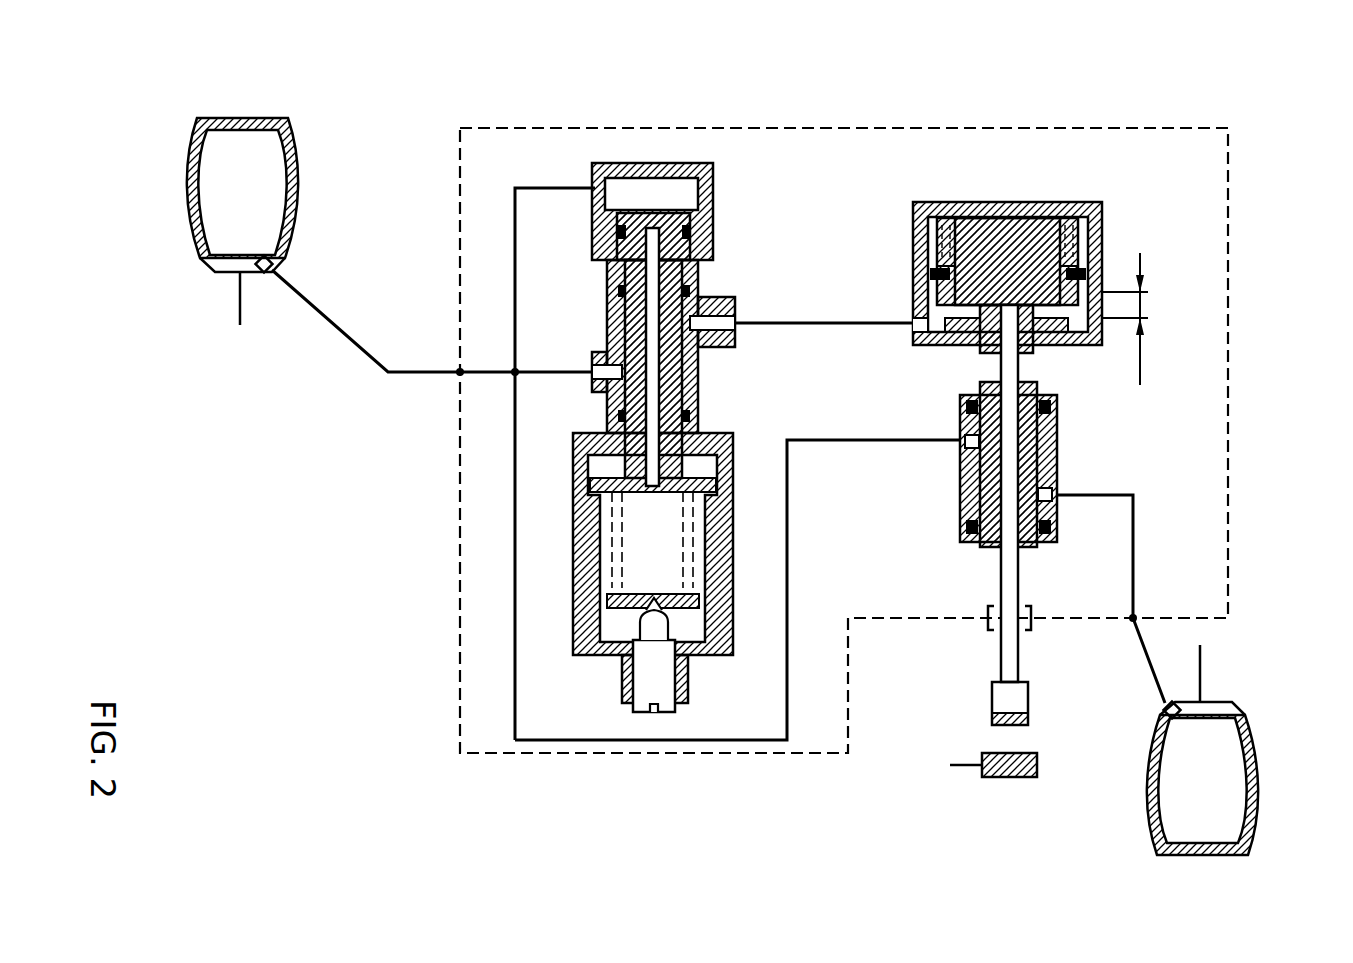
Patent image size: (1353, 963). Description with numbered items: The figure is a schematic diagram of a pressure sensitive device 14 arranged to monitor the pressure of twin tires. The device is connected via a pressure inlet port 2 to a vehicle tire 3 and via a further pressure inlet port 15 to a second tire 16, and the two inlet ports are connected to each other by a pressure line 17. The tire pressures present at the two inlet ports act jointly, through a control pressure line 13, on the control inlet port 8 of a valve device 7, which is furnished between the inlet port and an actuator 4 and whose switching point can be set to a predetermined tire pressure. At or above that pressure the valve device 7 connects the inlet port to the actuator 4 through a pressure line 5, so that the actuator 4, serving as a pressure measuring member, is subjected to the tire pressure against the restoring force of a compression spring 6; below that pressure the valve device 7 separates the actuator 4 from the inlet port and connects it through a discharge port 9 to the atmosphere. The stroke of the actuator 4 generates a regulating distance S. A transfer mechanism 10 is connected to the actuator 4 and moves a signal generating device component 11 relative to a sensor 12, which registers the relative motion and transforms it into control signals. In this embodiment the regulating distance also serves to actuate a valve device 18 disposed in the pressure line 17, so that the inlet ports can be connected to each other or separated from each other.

The pressure inlet port 2 is at (460, 375).
The vehicle tire 3 is at (218, 190).
The actuator 4 is at (1000, 203).
The pressure line 5 is at (843, 323).
The compression spring 6 is at (1090, 205).
The valve device 7 is at (733, 300).
The control inlet port 8 is at (596, 190).
The discharge port 9 is at (606, 277).
The transfer mechanism 10 is at (1010, 635).
The signal generating device component 11 is at (1010, 695).
The sensor 12 is at (1005, 775).
The control pressure line 13 is at (515, 312).
The pressure sensitive device 14 is at (497, 648).
The further pressure inlet port 15 is at (1140, 615).
The second tire 16 is at (1190, 770).
The pressure line 17 is at (730, 742).
The valve device 18 is at (1053, 445).